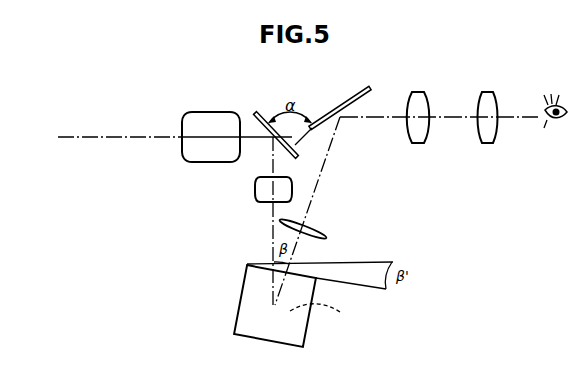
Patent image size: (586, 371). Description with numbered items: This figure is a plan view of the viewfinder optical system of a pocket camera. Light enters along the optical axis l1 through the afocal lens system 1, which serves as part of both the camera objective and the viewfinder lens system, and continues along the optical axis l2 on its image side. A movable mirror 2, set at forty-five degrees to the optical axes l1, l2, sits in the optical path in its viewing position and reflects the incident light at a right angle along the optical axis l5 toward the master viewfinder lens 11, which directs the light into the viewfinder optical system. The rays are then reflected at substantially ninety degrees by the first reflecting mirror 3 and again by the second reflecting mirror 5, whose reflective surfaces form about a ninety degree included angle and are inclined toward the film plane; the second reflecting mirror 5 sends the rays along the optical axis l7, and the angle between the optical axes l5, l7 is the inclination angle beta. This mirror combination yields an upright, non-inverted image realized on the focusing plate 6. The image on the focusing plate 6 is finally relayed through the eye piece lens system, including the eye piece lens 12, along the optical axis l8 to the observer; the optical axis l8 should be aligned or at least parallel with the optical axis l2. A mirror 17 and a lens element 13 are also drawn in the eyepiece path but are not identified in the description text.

The afocal lens system 1 is at (188, 157).
The movable mirror 2 is at (257, 111).
The first reflecting mirror 3 is at (323, 311).
The second reflecting mirror 5 is at (306, 334).
The focusing plate 6 is at (326, 225).
The master viewfinder lens 11 is at (255, 191).
The eye piece lens 12 is at (488, 100).
The objective lens 13 is at (416, 100).
The second mirror 17 is at (370, 90).
The optical axis l1 is at (82, 140).
The optical axis l2 is at (253, 140).
The optical axis l5 is at (275, 225).
The optical axis l7 is at (325, 163).
The optical axis l8 is at (396, 118).